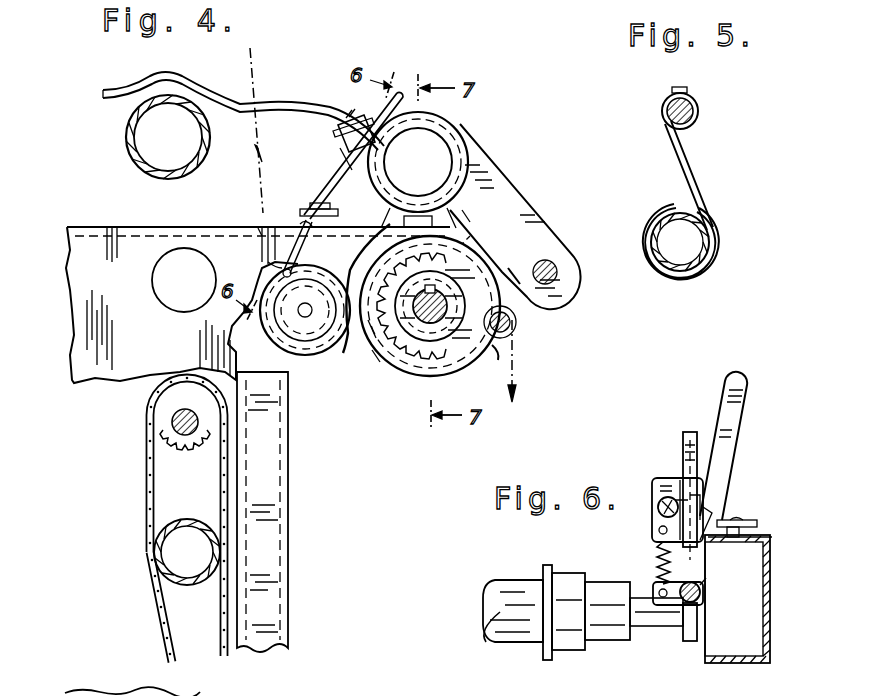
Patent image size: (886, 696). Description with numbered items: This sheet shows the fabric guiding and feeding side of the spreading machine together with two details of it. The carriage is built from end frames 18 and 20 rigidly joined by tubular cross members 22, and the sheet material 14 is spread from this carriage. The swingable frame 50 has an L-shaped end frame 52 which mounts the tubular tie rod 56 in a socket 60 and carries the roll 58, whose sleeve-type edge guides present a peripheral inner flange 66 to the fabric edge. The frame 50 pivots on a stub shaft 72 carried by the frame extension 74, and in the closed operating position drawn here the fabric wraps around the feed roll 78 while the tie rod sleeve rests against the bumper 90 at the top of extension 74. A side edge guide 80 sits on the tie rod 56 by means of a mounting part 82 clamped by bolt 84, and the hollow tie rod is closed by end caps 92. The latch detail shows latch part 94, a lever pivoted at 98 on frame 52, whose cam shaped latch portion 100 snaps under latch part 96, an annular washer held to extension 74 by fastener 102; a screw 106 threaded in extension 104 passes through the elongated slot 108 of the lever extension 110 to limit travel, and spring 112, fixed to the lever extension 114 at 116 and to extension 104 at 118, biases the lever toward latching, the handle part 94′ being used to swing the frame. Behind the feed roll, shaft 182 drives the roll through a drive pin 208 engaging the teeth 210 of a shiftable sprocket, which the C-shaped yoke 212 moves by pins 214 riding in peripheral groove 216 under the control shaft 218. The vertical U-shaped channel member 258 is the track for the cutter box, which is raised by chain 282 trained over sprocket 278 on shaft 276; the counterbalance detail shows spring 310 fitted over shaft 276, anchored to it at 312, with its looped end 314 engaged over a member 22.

In FIG. 4, the sheet material 14 is at (250, 66).
In FIG. 4, the end frame 18 is at (70, 260).
In FIG. 6, the end frame 18 is at (730, 664).
In FIG. 5, the end frame 20 is at (672, 276).
In FIG. 4, the tubular cross member 22 is at (166, 290).
In FIG. 4, the swingable frame 50 is at (512, 166).
In FIG. 4, the L-shaped end frame 52 is at (530, 212).
In FIG. 6, the L-shaped end frame 52 is at (693, 433).
In FIG. 4, the tubular tie rod 56 is at (438, 155).
In FIG. 6, the tubular tie rod 56 is at (492, 603).
In FIG. 4, the roll 58 is at (306, 358).
In FIG. 4, the socket 60 is at (297, 687).
In FIG. 4, the peripheral inner flange 66 is at (298, 349).
In FIG. 6, the peripheral inner flange 66 is at (548, 660).
In FIG. 4, the stub shaft 72 is at (556, 266).
In FIG. 4, the frame extension 74 is at (258, 228).
In FIG. 4, the feed roll 78 is at (465, 375).
In FIG. 4, the side edge guide 80 is at (243, 112).
In FIG. 4, the mounting part 82 is at (333, 133).
In FIG. 4, the bolt 84 is at (362, 114).
In FIG. 4, the bumper 90 is at (466, 220).
In FIG. 4, the end cap 92 is at (68, 692).
In FIG. 6, the latch part 94 is at (724, 474).
In FIG. 4, the handle part 94′ is at (388, 92).
In FIG. 6, the handle part 94′ is at (740, 392).
In FIG. 4, the latch part 96 is at (305, 222).
In FIG. 6, the latch part 96 is at (756, 524).
In FIG. 4, the pivot 98 is at (272, 266).
In FIG. 6, the pivot 98 is at (700, 594).
In FIG. 6, the cam shaped latch portion 100 is at (708, 522).
In FIG. 4, the fastener 102 is at (340, 212).
In FIG. 6, the fastener 102 is at (740, 519).
In FIG. 4, the extension 104 is at (418, 162).
In FIG. 6, the extension 104 is at (656, 480).
In FIG. 4, the screw 106 is at (346, 150).
In FIG. 6, the screw 106 is at (658, 508).
In FIG. 6, the elongated slot 108 is at (682, 484).
In FIG. 6, the extension 110 is at (660, 498).
In FIG. 6, the spring 112 is at (657, 560).
In FIG. 6, the extension 114 is at (691, 612).
In FIG. 6, the spring anchor 116 is at (664, 605).
In FIG. 6, the spring anchor 118 is at (658, 530).
In FIG. 4, the shaft 182 is at (514, 272).
In FIG. 4, the drive pin 208 is at (372, 257).
In FIG. 4, the teeth 210 is at (368, 336).
In FIG. 4, the C-shaped yoke 212 is at (504, 350).
In FIG. 4, the pin 214 is at (505, 232).
In FIG. 4, the peripheral groove 216 is at (373, 360).
In FIG. 4, the control shaft 218 is at (518, 326).
In FIG. 4, the U-shaped channel member 258 is at (290, 538).
In FIG. 4, the shaft 276 is at (175, 424).
In FIG. 5, the shaft 276 is at (701, 112).
In FIG. 4, the sprocket 278 is at (170, 441).
In FIG. 4, the chain 282 is at (224, 610).
In FIG. 5, the spring 310 is at (698, 190).
In FIG. 5, the spring anchor 312 is at (670, 92).
In FIG. 5, the looped end 314 is at (716, 248).